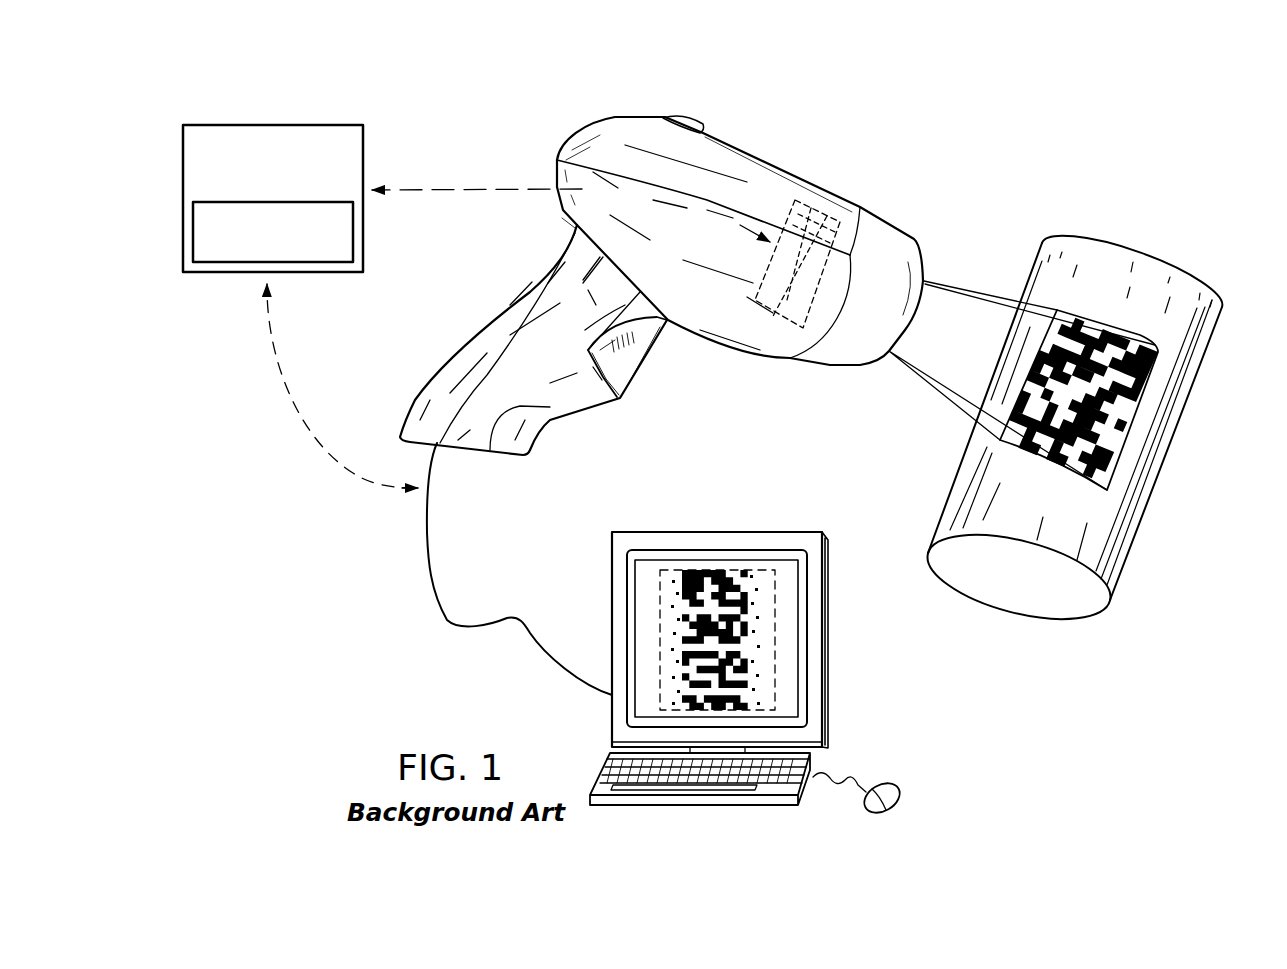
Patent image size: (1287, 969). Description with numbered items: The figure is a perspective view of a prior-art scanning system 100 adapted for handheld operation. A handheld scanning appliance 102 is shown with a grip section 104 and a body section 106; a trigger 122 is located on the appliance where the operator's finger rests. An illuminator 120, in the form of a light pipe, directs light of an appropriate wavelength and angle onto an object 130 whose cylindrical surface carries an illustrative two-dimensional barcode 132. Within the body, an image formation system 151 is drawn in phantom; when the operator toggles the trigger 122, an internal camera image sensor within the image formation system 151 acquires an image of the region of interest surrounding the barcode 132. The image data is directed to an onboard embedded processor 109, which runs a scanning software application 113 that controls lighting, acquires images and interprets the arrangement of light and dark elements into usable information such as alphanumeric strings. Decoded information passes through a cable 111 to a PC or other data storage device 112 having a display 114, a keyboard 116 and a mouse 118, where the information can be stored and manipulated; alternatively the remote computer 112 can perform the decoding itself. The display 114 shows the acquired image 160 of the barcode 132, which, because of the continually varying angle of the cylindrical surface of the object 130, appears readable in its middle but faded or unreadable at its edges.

The scanning system 100 is at (952, 96).
The handheld scanning appliance 102 is at (732, 135).
The grip section 104 is at (573, 393).
The body section 106 is at (660, 142).
The onboard embedded processor 109 is at (188, 168).
The cable 111 is at (428, 570).
The PC or other data storage device 112 is at (773, 646).
The scanning software application 113 is at (197, 253).
The display 114 is at (766, 613).
The keyboard 116 is at (813, 760).
The mouse 118 is at (890, 790).
The illuminator 120 is at (885, 233).
The trigger 122 is at (627, 343).
The object 130 is at (1160, 260).
The two-dimensional barcode 132 is at (1134, 425).
The image formation system 151 is at (827, 213).
The acquired image 160 is at (750, 560).